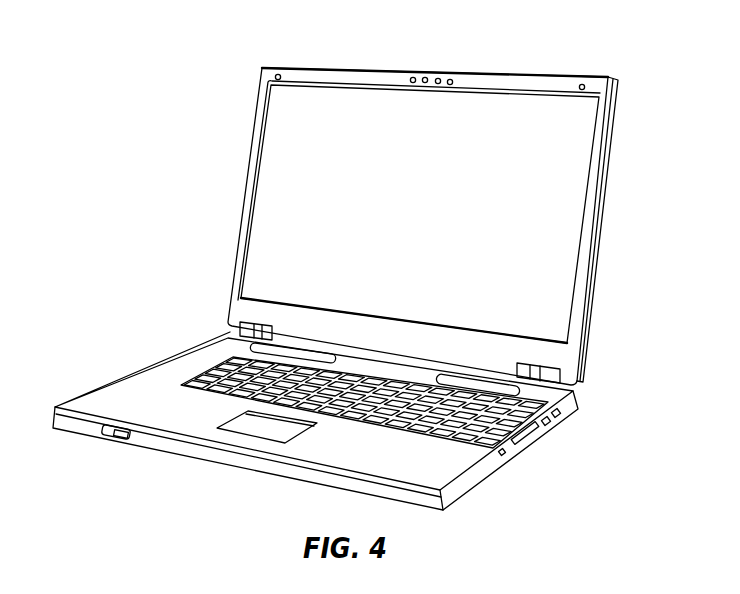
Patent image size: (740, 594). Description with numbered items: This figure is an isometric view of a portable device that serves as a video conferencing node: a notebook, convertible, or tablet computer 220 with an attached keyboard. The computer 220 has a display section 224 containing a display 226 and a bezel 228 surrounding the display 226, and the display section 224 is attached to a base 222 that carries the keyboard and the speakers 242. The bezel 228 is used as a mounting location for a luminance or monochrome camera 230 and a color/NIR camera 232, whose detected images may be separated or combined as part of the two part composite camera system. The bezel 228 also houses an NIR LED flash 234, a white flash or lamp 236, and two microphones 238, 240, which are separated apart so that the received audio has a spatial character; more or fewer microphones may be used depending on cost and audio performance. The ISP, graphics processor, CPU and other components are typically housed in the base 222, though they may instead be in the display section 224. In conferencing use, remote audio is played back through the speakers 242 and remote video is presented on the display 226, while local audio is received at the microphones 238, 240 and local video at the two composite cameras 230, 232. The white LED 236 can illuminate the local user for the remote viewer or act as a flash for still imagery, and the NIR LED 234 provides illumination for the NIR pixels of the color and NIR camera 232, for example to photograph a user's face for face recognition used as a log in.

The computer 220 is at (126, 256).
The base 222 is at (145, 377).
The display section 224 is at (617, 108).
The display 226 is at (420, 214).
The bezel 228 is at (589, 218).
The luminance or monochrome camera 230 is at (425, 77).
The color/NIR camera 232 is at (440, 78).
The NIR LED flash 234 is at (449, 86).
The white flash or lamp 236 is at (413, 77).
The microphone 238 is at (270, 74).
The microphone 240 is at (585, 84).
The speakers 242 is at (260, 350).